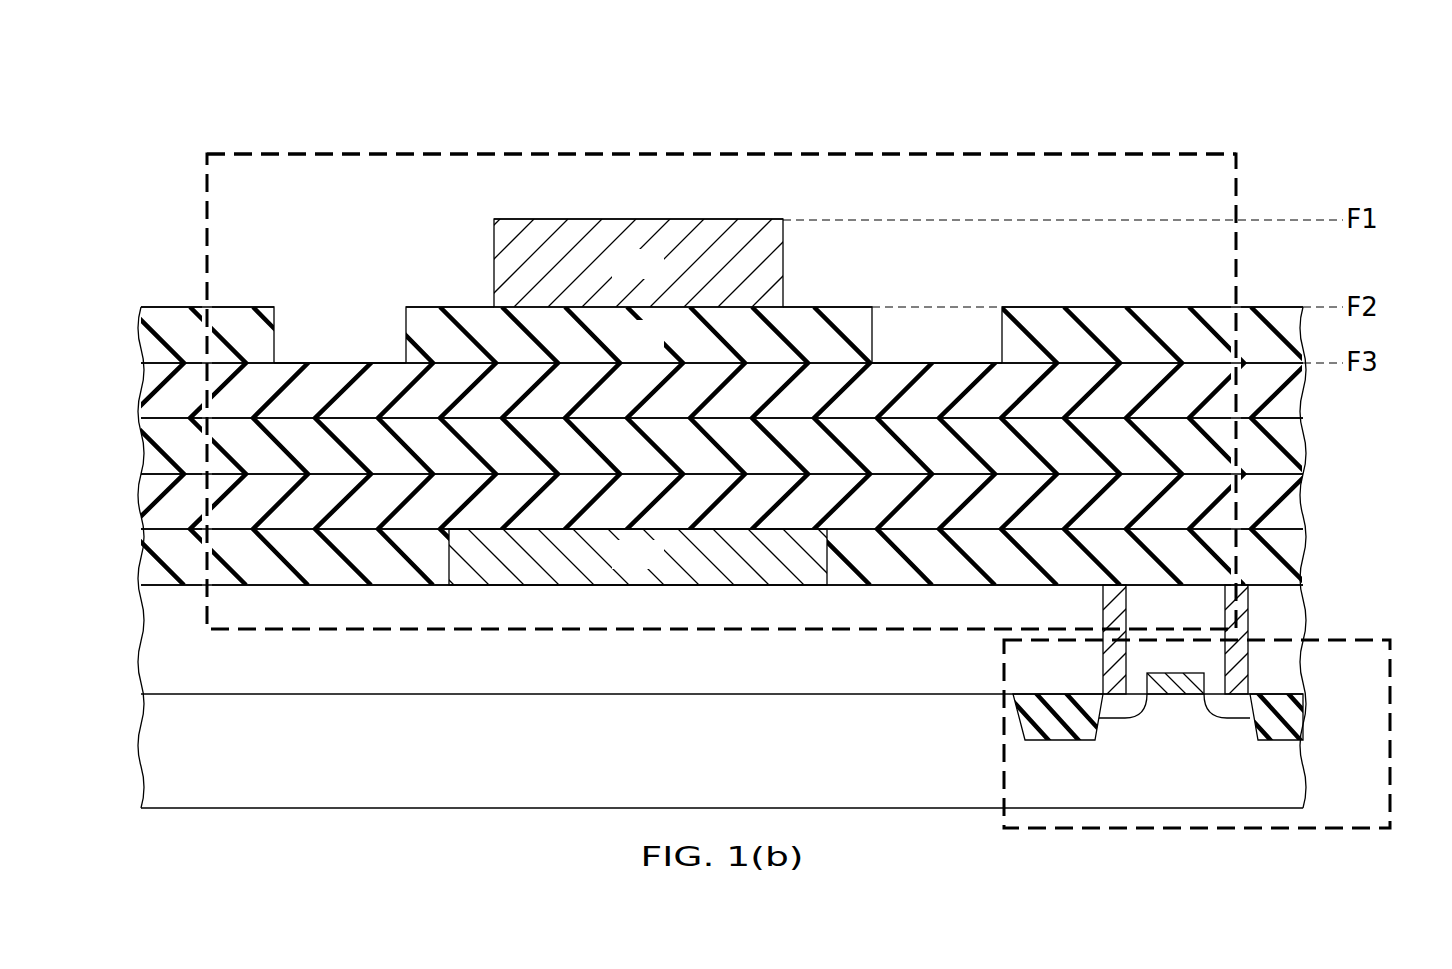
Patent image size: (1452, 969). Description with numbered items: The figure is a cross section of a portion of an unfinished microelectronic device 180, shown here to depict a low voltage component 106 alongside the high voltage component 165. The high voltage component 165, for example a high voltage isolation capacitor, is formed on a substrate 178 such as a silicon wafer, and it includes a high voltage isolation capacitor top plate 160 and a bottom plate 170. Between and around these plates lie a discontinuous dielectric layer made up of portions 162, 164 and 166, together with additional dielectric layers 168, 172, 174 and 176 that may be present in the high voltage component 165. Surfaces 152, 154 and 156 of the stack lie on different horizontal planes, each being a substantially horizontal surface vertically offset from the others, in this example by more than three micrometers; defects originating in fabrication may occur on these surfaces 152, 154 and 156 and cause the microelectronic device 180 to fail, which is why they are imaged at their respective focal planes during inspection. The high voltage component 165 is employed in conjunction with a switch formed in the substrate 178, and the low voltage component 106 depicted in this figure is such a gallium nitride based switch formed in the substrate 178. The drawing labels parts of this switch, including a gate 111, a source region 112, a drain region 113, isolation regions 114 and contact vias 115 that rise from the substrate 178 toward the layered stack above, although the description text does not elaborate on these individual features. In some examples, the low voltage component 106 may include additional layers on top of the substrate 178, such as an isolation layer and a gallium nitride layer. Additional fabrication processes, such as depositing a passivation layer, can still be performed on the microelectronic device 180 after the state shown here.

The low voltage component 106 is at (1201, 838).
The gate 111 is at (1170, 700).
The source region 112 is at (1125, 708).
The drain region 113 is at (1227, 710).
The isolation region 114 is at (1062, 732).
The contact via 115 is at (1110, 672).
The surface 152 is at (630, 218).
The surface 154 is at (466, 307).
The surface 156 is at (340, 363).
The high voltage isolation capacitor top plate 160 is at (619, 277).
The dielectric layer portion 162 is at (140, 334).
The dielectric layer portion 164 is at (619, 347).
The high voltage component 165 is at (738, 146).
The dielectric layer portion 166 is at (1303, 337).
The dielectric layer 168 is at (140, 390).
The high voltage isolation capacitor bottom plate 170 is at (619, 568).
The dielectric layer 172 is at (140, 447).
The dielectric layer 174 is at (140, 503).
The dielectric layer 176 is at (140, 558).
The substrate 178 is at (703, 675).
The microelectronic device 180 is at (468, 104).